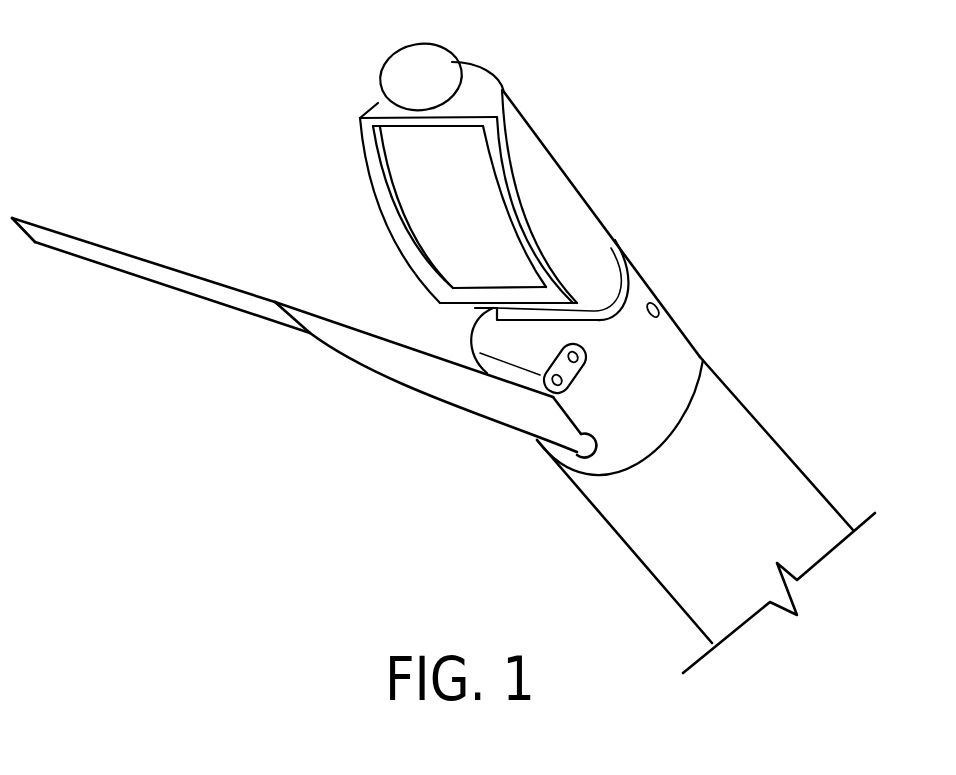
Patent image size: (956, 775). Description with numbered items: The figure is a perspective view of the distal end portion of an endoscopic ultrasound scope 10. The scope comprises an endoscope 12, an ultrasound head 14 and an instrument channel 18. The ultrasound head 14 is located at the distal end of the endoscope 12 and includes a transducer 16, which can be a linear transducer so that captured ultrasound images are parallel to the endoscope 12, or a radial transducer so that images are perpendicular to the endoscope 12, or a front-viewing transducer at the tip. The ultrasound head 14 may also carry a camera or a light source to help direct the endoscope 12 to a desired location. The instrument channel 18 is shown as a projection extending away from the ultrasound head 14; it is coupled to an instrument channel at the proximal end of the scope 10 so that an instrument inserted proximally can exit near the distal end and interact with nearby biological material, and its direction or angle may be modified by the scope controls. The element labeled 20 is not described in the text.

The endoscopic ultrasound scope 10 is at (735, 238).
The endoscope 12 is at (757, 440).
The ultrasound head 14 is at (550, 193).
The transducer 16 is at (422, 205).
The instrument channel 18 is at (410, 370).
The second blade 20 is at (70, 255).